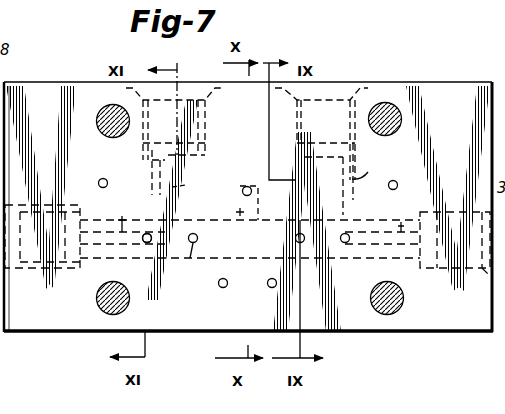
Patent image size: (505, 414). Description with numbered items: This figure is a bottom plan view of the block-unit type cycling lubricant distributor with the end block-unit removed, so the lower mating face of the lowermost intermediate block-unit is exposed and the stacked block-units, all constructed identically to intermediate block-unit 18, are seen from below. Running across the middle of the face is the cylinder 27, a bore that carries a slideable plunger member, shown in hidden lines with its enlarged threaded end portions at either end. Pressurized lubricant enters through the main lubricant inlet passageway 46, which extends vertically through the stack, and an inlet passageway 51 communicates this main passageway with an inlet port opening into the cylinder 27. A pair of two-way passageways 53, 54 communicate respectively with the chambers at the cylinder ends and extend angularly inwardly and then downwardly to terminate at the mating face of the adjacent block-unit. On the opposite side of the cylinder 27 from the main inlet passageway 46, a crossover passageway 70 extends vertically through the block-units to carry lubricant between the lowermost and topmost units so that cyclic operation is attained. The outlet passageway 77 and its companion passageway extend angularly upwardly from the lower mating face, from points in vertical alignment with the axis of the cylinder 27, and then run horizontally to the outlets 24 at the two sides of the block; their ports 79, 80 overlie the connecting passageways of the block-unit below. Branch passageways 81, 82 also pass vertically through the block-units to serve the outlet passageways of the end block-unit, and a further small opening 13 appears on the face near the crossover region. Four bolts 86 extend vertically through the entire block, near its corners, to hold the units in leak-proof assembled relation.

The outlet 24 is at (141, 82).
The bolt 86 is at (107, 117).
The branch passageway 81 is at (116, 165).
The main lubricant inlet passageway 46 is at (246, 186).
The inlet passageway 51 is at (238, 211).
The outlet passageway 77 is at (186, 185).
The intermediate block-unit 18 is at (368, 172).
The branch passageway 82 is at (398, 183).
The two-way passageway 53 is at (122, 218).
The port 79 is at (145, 243).
The cylinder 27 is at (201, 262).
The hole 13 is at (221, 288).
The crossover passageway 70 is at (270, 288).
The two-way passageway 54 is at (304, 242).
The port 80 is at (347, 243).